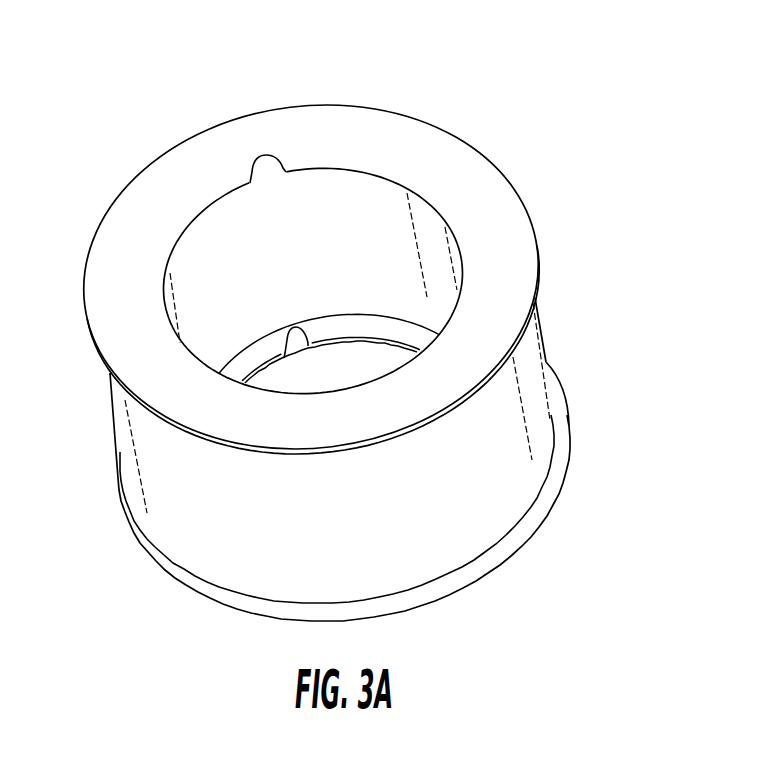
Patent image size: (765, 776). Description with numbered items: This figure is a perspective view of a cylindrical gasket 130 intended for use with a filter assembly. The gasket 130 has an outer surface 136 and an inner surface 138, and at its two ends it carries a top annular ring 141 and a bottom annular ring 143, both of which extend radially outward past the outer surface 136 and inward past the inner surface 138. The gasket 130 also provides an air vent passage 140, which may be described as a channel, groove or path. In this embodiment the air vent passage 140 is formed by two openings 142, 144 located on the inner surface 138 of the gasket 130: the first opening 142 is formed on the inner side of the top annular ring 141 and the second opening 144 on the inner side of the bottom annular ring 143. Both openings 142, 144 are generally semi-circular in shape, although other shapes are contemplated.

The cylindrical gasket 130 is at (582, 42).
The outer surface 136 is at (537, 345).
The inner surface 138 is at (400, 213).
The air vent passage 140 is at (232, 136).
The top annular ring 141 is at (513, 205).
The opening 142 is at (268, 153).
The bottom annular ring 143 is at (507, 550).
The opening 144 is at (287, 356).